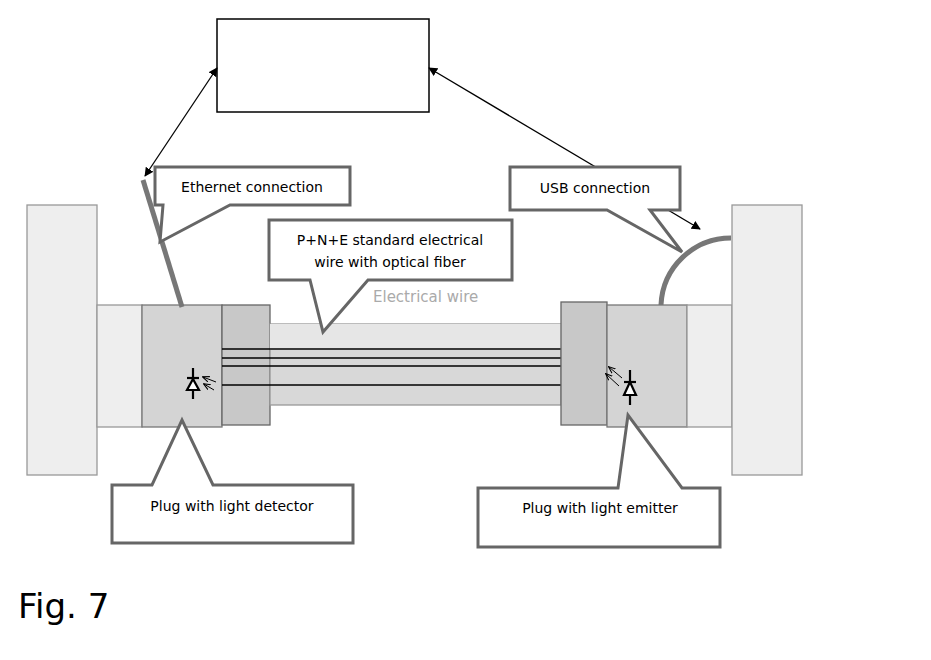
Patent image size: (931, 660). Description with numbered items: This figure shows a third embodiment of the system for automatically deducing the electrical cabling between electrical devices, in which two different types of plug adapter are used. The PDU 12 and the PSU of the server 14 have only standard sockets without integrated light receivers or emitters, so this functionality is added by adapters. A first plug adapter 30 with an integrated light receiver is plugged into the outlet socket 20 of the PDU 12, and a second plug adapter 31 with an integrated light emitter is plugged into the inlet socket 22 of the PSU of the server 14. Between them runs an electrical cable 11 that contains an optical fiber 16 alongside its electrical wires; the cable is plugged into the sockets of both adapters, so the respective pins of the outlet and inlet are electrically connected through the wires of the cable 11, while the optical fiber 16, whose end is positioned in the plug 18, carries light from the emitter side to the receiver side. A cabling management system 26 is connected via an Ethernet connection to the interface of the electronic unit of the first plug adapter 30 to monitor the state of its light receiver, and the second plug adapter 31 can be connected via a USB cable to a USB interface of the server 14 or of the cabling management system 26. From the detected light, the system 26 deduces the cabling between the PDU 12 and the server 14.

The cabling management system 26 is at (323, 65).
The PDU 12 is at (62, 326).
The outlet socket 20 is at (120, 351).
The first plug adapter 30 is at (182, 366).
The plug 18 is at (246, 365).
The optical fiber 16 is at (419, 390).
The electrical cable 11 is at (414, 358).
The second plug adapter 31 is at (646, 366).
The inlet socket 22 is at (709, 351).
The server 14 is at (767, 320).